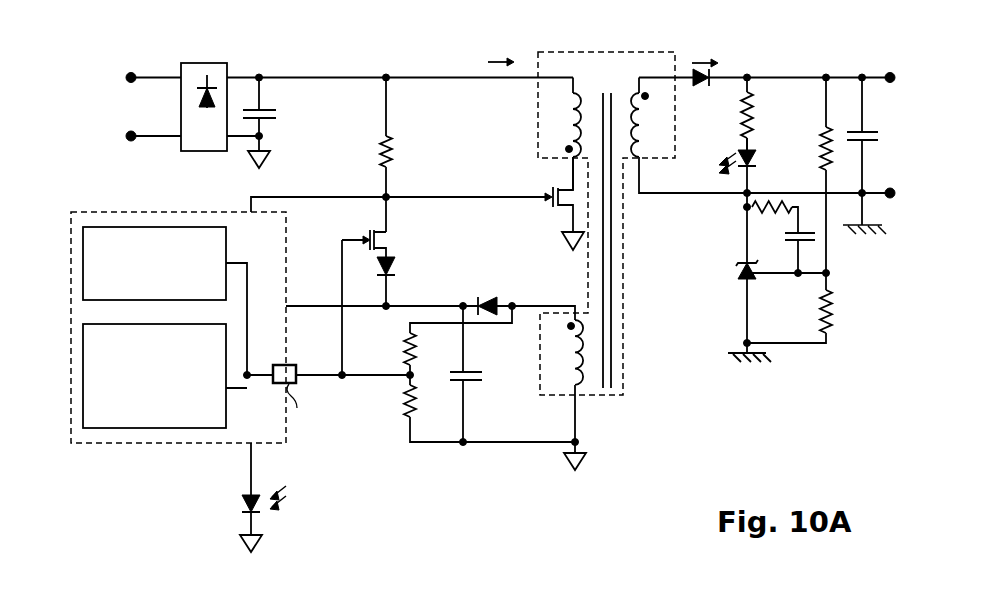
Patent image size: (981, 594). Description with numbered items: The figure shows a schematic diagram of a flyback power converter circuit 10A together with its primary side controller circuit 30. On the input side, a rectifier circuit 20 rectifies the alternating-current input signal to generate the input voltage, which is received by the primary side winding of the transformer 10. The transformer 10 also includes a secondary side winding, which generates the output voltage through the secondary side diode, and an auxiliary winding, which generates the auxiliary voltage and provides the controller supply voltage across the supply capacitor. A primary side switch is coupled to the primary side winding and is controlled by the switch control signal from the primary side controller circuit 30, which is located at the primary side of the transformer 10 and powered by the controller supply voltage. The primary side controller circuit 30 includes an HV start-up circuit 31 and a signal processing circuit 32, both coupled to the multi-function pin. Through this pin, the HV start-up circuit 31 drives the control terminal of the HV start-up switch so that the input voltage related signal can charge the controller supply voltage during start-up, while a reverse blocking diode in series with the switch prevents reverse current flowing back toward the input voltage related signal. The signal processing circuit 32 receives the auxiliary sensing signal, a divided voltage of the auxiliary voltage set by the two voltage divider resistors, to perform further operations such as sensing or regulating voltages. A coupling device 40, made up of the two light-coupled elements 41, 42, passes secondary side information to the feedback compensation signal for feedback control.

The flyback power converter circuit 10A is at (460, 37).
The transformer 10 is at (627, 52).
The rectifier circuit 20 is at (197, 134).
The primary side controller circuit 30 is at (255, 242).
The HV start-up circuit 31 is at (145, 297).
The signal processing circuit 32 is at (145, 420).
The coupling device 40 is at (489, 339).
The photodetector of optocoupler 41 is at (245, 500).
The light emitting diode of optocoupler 42 is at (764, 160).